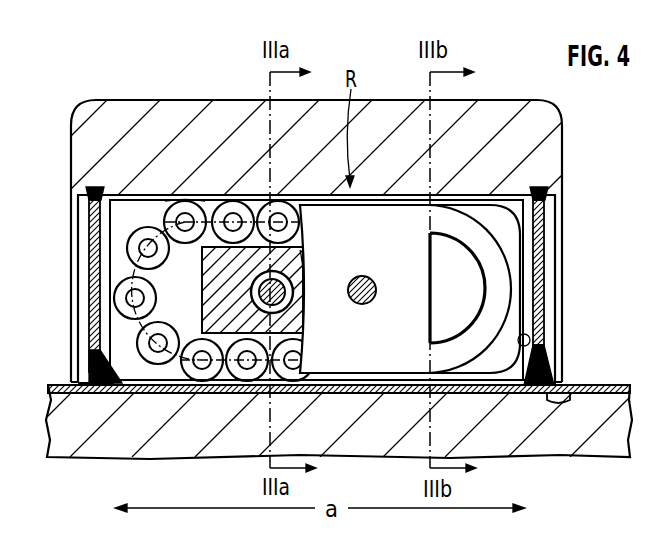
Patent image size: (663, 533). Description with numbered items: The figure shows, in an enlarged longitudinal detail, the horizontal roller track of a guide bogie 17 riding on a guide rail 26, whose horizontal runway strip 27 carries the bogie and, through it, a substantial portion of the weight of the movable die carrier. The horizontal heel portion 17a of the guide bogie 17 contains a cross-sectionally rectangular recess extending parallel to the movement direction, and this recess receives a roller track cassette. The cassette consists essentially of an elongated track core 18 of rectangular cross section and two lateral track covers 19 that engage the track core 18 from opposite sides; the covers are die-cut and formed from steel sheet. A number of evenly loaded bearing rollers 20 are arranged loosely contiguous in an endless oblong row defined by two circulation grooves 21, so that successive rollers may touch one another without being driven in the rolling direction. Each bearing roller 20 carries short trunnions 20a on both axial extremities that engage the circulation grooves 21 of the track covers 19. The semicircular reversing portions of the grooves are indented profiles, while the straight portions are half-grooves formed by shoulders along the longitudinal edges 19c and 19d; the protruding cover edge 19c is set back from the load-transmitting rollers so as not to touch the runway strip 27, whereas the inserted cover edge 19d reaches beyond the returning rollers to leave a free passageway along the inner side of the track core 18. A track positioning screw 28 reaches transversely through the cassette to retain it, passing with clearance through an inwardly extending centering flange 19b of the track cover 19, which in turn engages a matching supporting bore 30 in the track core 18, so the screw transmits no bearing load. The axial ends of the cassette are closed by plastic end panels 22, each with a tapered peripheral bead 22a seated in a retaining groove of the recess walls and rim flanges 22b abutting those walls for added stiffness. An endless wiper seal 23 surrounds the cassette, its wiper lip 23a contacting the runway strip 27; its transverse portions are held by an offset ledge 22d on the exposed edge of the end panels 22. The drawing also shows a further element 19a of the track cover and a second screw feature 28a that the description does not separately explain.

The guide bogie 17 is at (507, 96).
The horizontal heel portion 17a is at (108, 128).
The track core 18 is at (220, 289).
The lateral track cover 19 is at (177, 273).
The cage upper web 19a is at (183, 203).
The centering flange 19b is at (297, 262).
The protruding cover edge 19c is at (362, 382).
The inserted cover edge 19d is at (385, 193).
The bearing roller 20 is at (134, 231).
The trunnion 20a is at (277, 216).
The circulation groove 21 is at (123, 370).
The end panel 22 is at (87, 252).
The peripheral bead 22a is at (90, 187).
The rim flange 22b is at (88, 203).
The offset ledge 22d is at (525, 332).
The wiper seal 23 is at (100, 387).
The wiper lip 23a is at (92, 390).
The guide rail 26 is at (613, 437).
The runway strip 27 is at (617, 389).
The track positioning screw 28 is at (250, 292).
The pin 28a is at (373, 293).
The supporting bore 30 is at (290, 285).